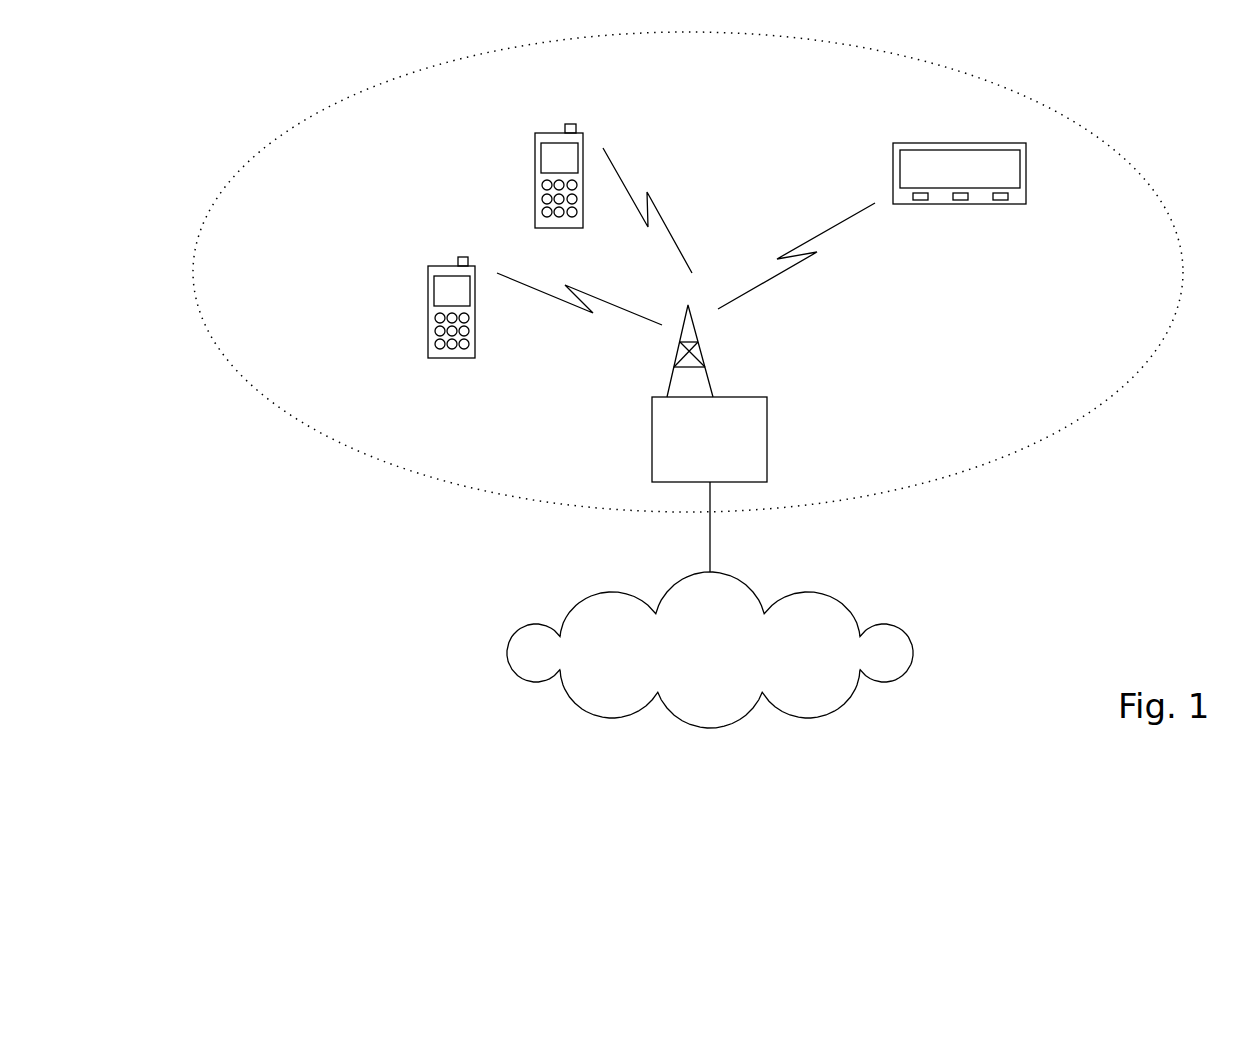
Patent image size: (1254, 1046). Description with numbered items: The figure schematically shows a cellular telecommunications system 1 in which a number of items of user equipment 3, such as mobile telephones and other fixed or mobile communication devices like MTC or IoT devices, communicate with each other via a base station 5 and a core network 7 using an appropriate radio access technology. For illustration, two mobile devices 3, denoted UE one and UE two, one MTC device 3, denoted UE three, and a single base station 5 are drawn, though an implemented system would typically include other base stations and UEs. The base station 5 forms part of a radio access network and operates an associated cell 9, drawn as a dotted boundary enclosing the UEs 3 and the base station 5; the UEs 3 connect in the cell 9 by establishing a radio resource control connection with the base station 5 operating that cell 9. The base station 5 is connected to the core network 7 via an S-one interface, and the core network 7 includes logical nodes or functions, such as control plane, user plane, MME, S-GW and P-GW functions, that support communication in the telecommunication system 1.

The cellular telecommunications system 1 is at (253, 730).
The user equipment 3 is at (428, 277).
The base station 5 is at (742, 396).
The core network 7 is at (855, 620).
The cell 9 is at (688, 272).